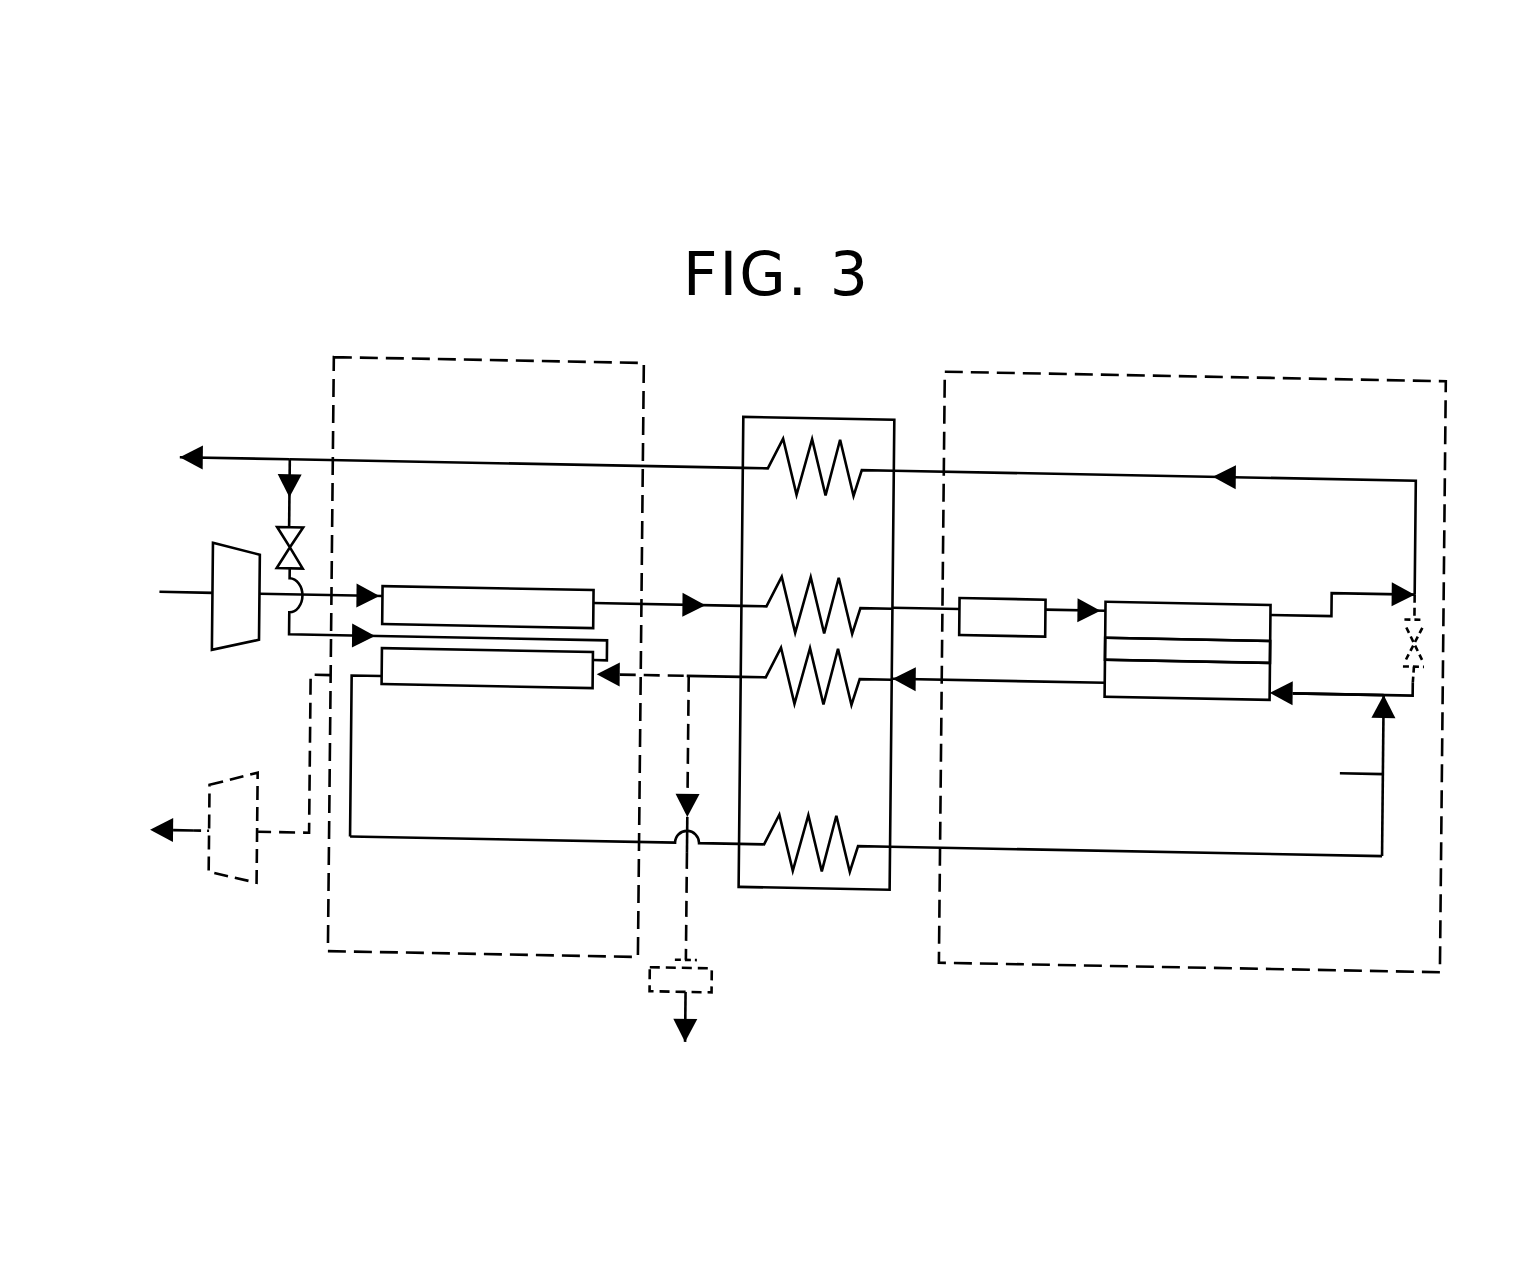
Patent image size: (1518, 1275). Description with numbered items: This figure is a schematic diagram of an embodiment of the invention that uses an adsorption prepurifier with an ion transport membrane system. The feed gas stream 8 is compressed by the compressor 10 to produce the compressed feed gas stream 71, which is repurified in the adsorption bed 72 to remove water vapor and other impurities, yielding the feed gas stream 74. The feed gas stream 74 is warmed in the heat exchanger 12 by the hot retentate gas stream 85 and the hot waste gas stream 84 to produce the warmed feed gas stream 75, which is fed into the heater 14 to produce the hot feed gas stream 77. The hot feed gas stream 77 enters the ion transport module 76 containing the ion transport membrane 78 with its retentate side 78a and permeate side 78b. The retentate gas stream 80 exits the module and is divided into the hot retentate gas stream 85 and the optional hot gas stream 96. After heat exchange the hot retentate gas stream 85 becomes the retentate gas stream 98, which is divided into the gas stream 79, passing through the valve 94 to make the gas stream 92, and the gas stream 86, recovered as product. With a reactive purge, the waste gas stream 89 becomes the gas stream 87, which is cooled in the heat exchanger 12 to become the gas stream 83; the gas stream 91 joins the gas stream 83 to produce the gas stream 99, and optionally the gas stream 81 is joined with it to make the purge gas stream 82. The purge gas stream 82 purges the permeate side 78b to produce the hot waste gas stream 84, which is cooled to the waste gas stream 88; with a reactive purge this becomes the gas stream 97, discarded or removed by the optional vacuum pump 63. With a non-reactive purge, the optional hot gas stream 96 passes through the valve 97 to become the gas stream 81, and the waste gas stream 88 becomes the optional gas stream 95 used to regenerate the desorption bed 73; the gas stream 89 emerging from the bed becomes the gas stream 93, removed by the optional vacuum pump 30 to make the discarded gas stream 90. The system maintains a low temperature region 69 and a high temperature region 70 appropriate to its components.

The feed gas stream 8 is at (192, 609).
The compressor 10 is at (240, 653).
The heat exchanger 12 is at (840, 889).
The heater 14 is at (1024, 594).
The vacuum pump 30 is at (260, 870).
The vacuum pump 63 is at (730, 973).
The low temperature region 69 is at (463, 964).
The high temperature region 70 is at (1203, 962).
The compressed feed gas stream 71 is at (323, 611).
The adsorption bed 72 is at (506, 591).
The desorption bed 73 is at (458, 696).
The feed gas stream 74 is at (720, 602).
The warmed feed gas stream 75 is at (935, 602).
The ion transport module 76 is at (1165, 594).
The hot feed gas stream 77 is at (1068, 602).
The ion transport membrane 78 is at (1100, 639).
The retentate side 78a is at (1205, 624).
The permeate side 78b is at (1172, 653).
The gas stream 79 is at (291, 518).
The retentate gas stream 80 is at (1303, 603).
The gas stream 81 is at (1445, 653).
The purge gas stream 82 is at (1355, 682).
The gas stream 83 is at (1385, 794).
The hot waste gas stream 84 is at (1075, 680).
The hot retentate gas stream 85 is at (1063, 465).
The gas stream 86 is at (228, 469).
The gas stream 87 is at (445, 844).
The waste gas stream 88 is at (728, 681).
The waste gas stream 89 is at (372, 683).
The gas stream 90 is at (195, 857).
The gas stream 91 is at (1341, 763).
The gas stream 92 is at (607, 654).
The gas stream 93 is at (290, 840).
The valve 94 is at (279, 553).
The gas stream 95 is at (630, 690).
The hot gas stream 96 is at (1426, 573).
The valve 97 is at (684, 770).
The retentate gas stream 98 is at (475, 466).
The gas stream 99 is at (1388, 739).